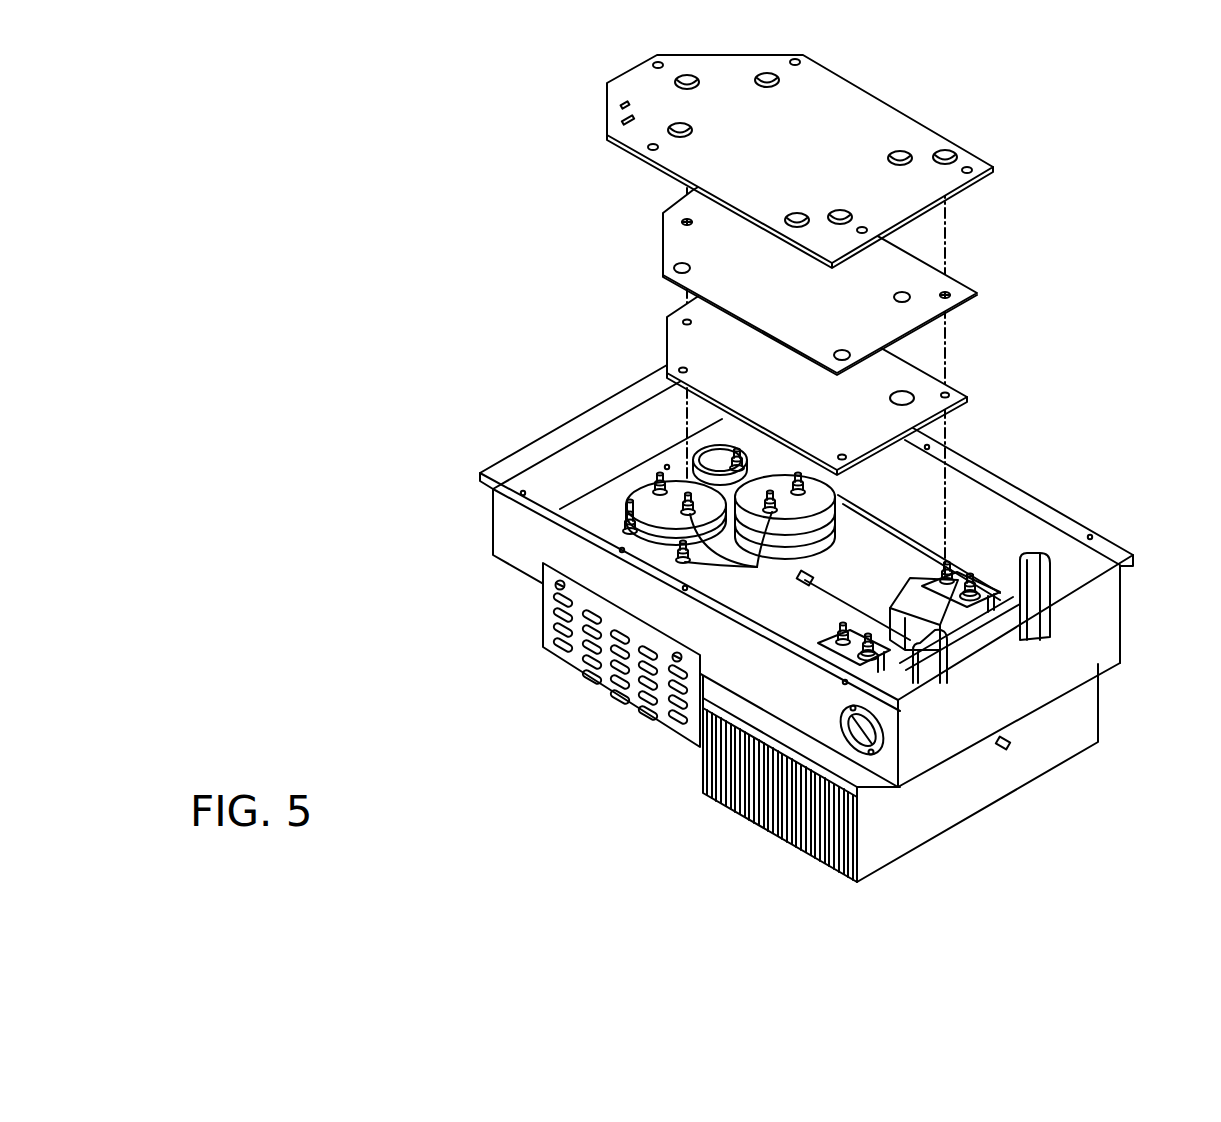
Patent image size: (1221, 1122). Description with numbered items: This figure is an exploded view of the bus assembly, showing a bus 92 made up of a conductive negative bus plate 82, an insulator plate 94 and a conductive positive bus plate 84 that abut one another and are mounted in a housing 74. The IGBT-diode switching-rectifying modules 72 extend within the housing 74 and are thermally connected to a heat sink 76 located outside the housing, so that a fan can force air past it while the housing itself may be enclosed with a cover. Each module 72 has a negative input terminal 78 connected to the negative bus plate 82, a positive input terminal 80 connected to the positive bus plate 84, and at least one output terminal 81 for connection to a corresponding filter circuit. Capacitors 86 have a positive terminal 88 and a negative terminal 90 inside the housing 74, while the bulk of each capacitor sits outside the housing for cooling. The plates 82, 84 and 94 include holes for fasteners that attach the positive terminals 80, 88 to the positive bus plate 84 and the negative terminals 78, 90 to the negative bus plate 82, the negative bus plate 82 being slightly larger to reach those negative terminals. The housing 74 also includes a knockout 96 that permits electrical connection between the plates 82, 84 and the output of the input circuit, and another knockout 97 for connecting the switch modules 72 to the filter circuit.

The IGBT-diode switching-rectifying module 72 is at (945, 648).
The housing 74 is at (1113, 628).
The heat sink 76 is at (1088, 742).
The negative input terminal 78 is at (972, 582).
The positive input terminal 80 is at (946, 570).
The output terminal 81 is at (1005, 603).
The negative bus plate 82 is at (888, 108).
The positive bus plate 84 is at (957, 390).
The capacitor 86 is at (630, 498).
The positive terminal 88 is at (757, 567).
The negative terminal 90 is at (656, 480).
The bus 92 is at (1055, 290).
The insulator plate 94 is at (902, 272).
The knockout 96 is at (718, 447).
The knockout 97 is at (853, 742).